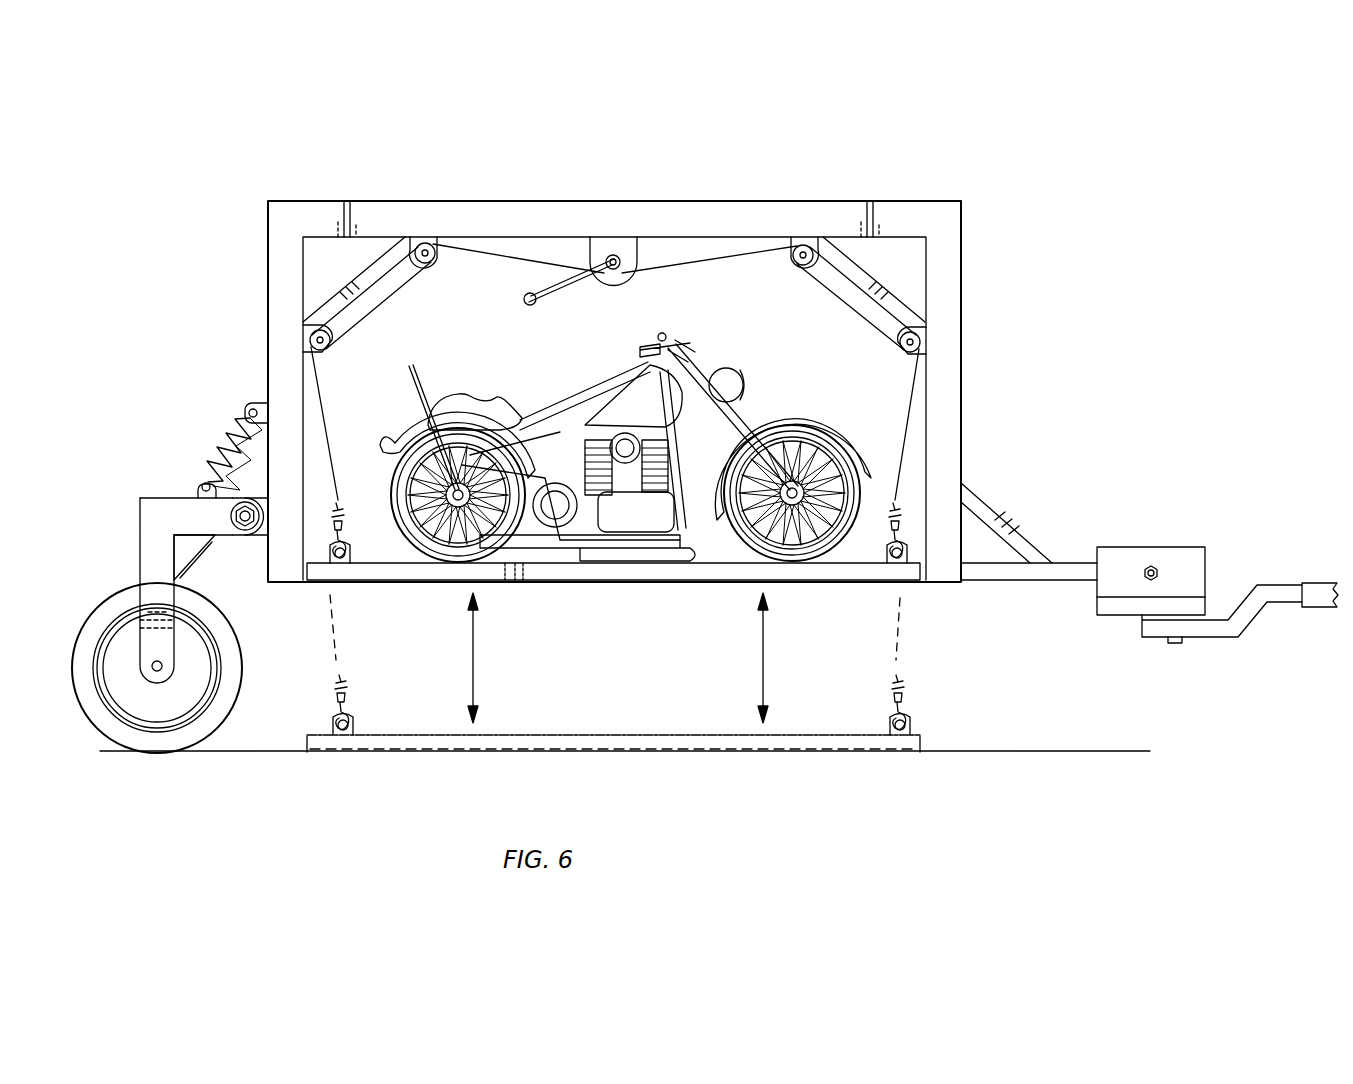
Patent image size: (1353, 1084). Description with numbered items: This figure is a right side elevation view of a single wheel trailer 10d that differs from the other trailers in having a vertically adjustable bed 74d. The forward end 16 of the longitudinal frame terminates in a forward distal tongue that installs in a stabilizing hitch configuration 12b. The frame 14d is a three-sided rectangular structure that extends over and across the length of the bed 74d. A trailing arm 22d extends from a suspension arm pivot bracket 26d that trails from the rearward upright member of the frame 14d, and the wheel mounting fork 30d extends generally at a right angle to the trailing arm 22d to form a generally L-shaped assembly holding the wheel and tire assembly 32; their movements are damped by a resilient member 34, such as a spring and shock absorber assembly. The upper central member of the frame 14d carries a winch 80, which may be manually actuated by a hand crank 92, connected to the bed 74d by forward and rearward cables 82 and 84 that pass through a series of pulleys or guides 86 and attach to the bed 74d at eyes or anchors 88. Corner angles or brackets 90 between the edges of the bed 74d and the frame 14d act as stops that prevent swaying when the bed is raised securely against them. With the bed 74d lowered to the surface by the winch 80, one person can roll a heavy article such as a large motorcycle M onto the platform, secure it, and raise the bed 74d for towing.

The trailer 10d is at (373, 766).
The hitch configuration 12b is at (1160, 657).
The frame 14d is at (268, 248).
The forward end 16 is at (1045, 580).
The trailing arm 22d is at (167, 497).
The suspension arm pivot bracket 26d is at (248, 525).
The wheel mounting fork 30d is at (150, 572).
The wheel and tire assembly 32 is at (178, 765).
The resilient member 34 is at (222, 432).
The vertically adjustable bed 74d is at (610, 583).
The winch 80 is at (618, 236).
The forward cable 82 is at (687, 270).
The rearward cable 84 is at (514, 240).
The pulleys or guides 86 is at (430, 265).
The eyes or anchors 88 is at (348, 562).
The corner angles or brackets 90 is at (333, 560).
The hand crank 92 is at (542, 305).
The motorcycle M is at (625, 393).